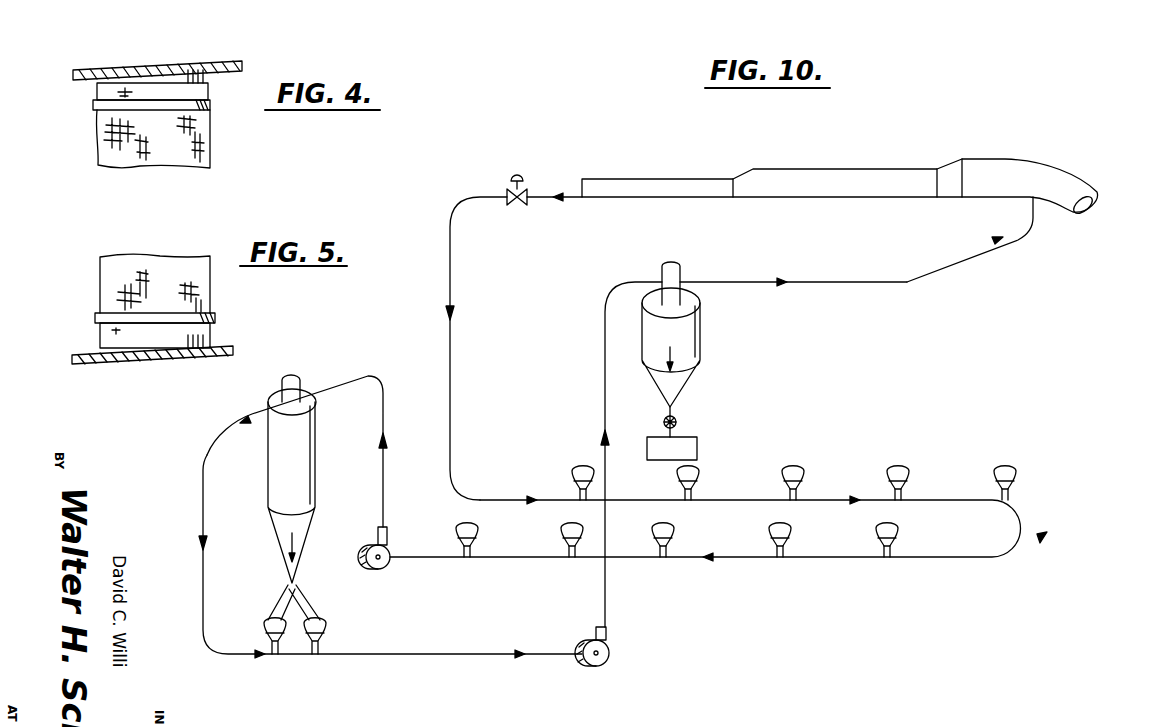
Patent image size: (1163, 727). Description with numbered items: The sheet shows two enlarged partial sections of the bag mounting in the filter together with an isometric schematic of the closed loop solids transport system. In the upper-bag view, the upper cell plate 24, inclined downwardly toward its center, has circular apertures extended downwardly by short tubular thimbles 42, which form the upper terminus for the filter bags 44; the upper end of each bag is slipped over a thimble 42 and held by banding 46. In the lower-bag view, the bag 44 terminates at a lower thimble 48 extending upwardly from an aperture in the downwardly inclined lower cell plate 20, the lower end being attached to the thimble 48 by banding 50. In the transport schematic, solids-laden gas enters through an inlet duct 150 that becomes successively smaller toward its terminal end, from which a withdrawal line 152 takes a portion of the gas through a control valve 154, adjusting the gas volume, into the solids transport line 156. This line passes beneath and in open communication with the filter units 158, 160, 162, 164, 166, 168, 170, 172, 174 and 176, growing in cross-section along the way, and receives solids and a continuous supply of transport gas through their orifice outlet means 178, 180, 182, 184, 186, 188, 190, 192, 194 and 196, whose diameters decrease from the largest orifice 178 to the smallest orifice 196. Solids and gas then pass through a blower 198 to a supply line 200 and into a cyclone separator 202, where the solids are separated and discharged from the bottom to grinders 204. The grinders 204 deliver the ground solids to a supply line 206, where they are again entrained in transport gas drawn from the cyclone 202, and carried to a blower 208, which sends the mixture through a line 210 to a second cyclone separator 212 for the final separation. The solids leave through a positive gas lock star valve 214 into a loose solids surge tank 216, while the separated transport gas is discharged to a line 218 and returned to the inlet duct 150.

In FIG. 5, the lower cell plate 20 is at (138, 358).
In FIG. 4, the upper cell plate 24 is at (167, 67).
In FIG. 4, the upper thimbles 42 is at (143, 82).
In FIG. 4, the filter bags 44 is at (117, 142).
In FIG. 5, the filter bags 44 is at (117, 273).
In FIG. 4, the banding 46 is at (210, 107).
In FIG. 5, the lower thimbles 48 is at (118, 342).
In FIG. 5, the banding 50 is at (213, 318).
In FIG. 10, the inlet duct 150 is at (831, 182).
In FIG. 10, the solids-laden gas withdrawal line 152 is at (537, 193).
In FIG. 10, the control valve 154 is at (508, 188).
In FIG. 10, the solids transport line 156 is at (748, 502).
In FIG. 10, the filter unit 158 is at (582, 472).
In FIG. 10, the filter unit 160 is at (697, 477).
In FIG. 10, the filter unit 162 is at (797, 475).
In FIG. 10, the filter unit 164 is at (905, 475).
In FIG. 10, the filter unit 166 is at (1015, 477).
In FIG. 10, the filter unit 168 is at (895, 537).
In FIG. 10, the filter unit 170 is at (788, 530).
In FIG. 10, the filter unit 172 is at (662, 528).
In FIG. 10, the filter unit 174 is at (570, 528).
In FIG. 10, the filter unit 176 is at (463, 527).
In FIG. 10, the outlet means 178 is at (578, 496).
In FIG. 10, the outlet means 180 is at (697, 495).
In FIG. 10, the outlet means 182 is at (800, 495).
In FIG. 10, the outlet means 184 is at (908, 495).
In FIG. 10, the outlet means 186 is at (1013, 495).
In FIG. 10, the outlet means 188 is at (895, 553).
In FIG. 10, the outlet means 190 is at (787, 555).
In FIG. 10, the outlet means 192 is at (660, 555).
In FIG. 10, the outlet means 194 is at (567, 555).
In FIG. 10, the outlet means 196 is at (460, 555).
In FIG. 10, the blower 198 is at (382, 572).
In FIG. 10, the supply line 200 is at (338, 390).
In FIG. 10, the cyclone separator 202 is at (302, 480).
In FIG. 10, the grinders 204 is at (266, 630).
In FIG. 10, the supply line 206 is at (203, 497).
In FIG. 10, the blower 208 is at (609, 653).
In FIG. 10, the line 210 is at (600, 425).
In FIG. 10, the second cyclone separator 212 is at (685, 348).
In FIG. 10, the star valve 214 is at (676, 420).
In FIG. 10, the loose solids surge tank 216 is at (687, 450).
In FIG. 10, the line 218 is at (965, 256).